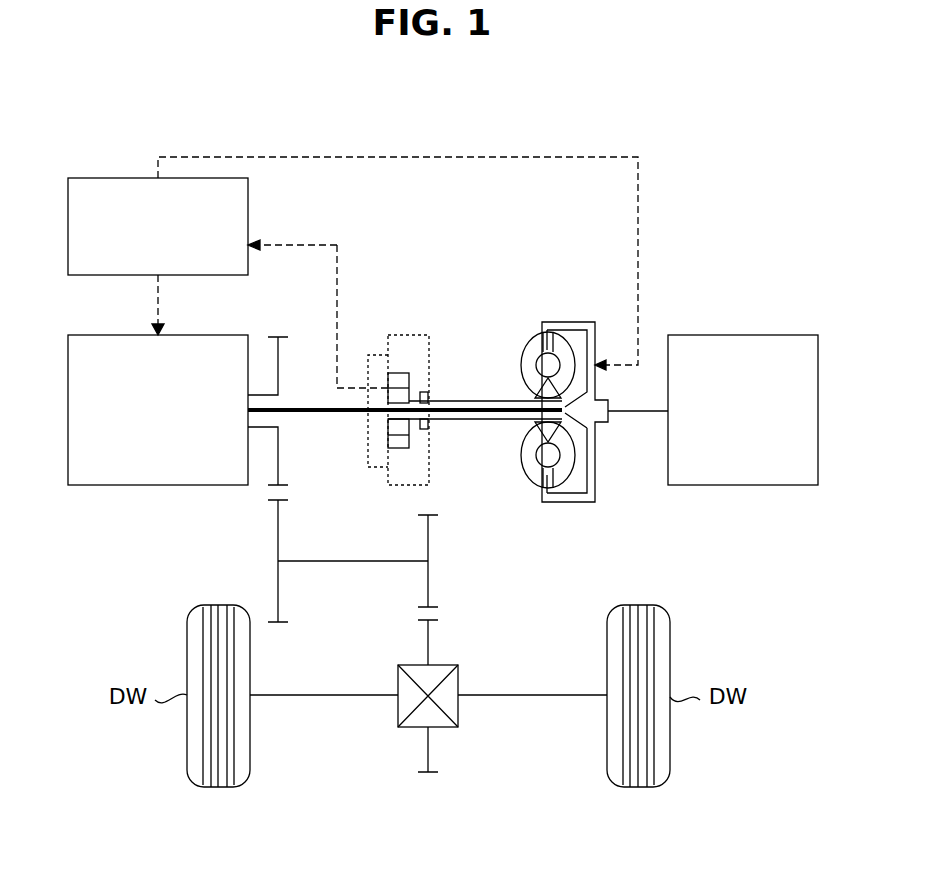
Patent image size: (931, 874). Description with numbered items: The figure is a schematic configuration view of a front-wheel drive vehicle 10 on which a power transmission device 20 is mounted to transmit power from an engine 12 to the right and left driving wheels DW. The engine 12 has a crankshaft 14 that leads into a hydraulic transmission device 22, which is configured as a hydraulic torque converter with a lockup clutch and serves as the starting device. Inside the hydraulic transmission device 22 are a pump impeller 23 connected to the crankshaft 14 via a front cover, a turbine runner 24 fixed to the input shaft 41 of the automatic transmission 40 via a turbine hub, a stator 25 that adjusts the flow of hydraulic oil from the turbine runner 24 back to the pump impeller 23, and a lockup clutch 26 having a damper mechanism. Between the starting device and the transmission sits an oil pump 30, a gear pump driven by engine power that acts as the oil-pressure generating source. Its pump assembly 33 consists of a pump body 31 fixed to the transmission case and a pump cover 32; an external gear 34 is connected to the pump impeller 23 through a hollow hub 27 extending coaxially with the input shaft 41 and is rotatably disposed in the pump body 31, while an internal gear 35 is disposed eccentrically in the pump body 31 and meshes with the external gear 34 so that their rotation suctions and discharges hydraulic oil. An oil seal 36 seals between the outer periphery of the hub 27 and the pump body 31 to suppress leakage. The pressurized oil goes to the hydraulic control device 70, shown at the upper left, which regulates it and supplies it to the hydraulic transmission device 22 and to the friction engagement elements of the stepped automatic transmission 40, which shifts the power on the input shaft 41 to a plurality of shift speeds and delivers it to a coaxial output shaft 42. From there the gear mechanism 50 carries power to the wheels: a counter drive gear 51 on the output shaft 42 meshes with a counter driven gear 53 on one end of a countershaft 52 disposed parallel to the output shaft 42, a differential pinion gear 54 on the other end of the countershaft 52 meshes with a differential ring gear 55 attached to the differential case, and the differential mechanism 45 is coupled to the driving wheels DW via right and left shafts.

The vehicle 10 is at (748, 540).
The engine 12 is at (725, 335).
The crankshaft 14 is at (633, 415).
The power transmission device 20 is at (658, 325).
The hydraulic transmission device 22 is at (603, 468).
The pump impeller 23 is at (522, 352).
The turbine runner 24 is at (548, 345).
The stator 25 is at (562, 348).
The lockup clutch 26 is at (582, 473).
The hollow hub 27 is at (477, 422).
The oil pump 30 is at (435, 460).
The pump body 31 is at (425, 335).
The pump cover 32 is at (385, 355).
The pump assembly 33 is at (455, 251).
The external gear 34 is at (402, 398).
The internal gear 35 is at (393, 440).
The oil seal 36 is at (428, 395).
The automatic transmission 40 is at (88, 485).
The input shaft 41 is at (305, 408).
The output shaft 42 is at (268, 395).
The differential mechanism 45 is at (462, 717).
The gear mechanism 50 is at (349, 582).
The counter drive gear 51 is at (278, 465).
The countershaft 52 is at (370, 562).
The counter driven gear 53 is at (278, 530).
The differential pinion gear 54 is at (430, 568).
The differential ring gear 55 is at (430, 637).
The hydraulic control device 70 is at (98, 177).